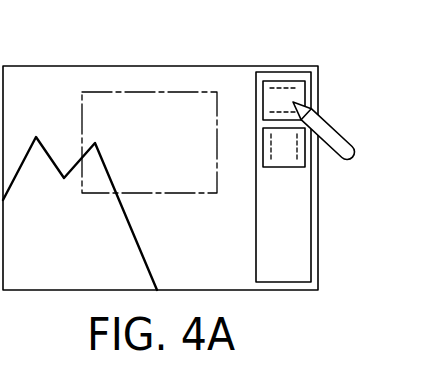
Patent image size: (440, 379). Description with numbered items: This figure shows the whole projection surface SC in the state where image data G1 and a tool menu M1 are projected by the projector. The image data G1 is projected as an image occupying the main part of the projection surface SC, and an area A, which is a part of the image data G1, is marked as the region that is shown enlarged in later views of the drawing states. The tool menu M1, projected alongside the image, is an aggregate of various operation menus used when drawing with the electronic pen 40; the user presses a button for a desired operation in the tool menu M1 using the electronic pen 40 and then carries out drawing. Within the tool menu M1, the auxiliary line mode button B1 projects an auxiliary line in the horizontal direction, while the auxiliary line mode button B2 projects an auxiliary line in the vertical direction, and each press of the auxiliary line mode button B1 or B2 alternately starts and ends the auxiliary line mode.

The projection surface SC is at (103, 67).
The image data G1 is at (43, 82).
The area A is at (160, 92).
The tool menu M1 is at (312, 231).
The auxiliary line mode button B1 is at (292, 93).
The auxiliary line mode button B2 is at (275, 142).
The electronic pen 40 is at (332, 124).